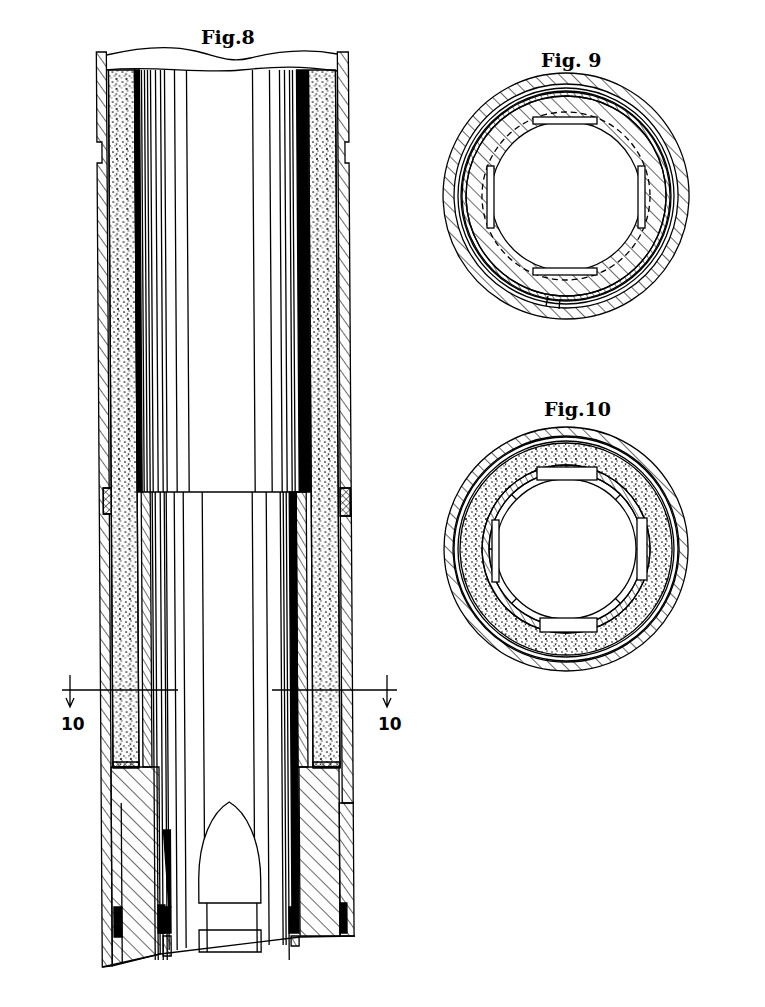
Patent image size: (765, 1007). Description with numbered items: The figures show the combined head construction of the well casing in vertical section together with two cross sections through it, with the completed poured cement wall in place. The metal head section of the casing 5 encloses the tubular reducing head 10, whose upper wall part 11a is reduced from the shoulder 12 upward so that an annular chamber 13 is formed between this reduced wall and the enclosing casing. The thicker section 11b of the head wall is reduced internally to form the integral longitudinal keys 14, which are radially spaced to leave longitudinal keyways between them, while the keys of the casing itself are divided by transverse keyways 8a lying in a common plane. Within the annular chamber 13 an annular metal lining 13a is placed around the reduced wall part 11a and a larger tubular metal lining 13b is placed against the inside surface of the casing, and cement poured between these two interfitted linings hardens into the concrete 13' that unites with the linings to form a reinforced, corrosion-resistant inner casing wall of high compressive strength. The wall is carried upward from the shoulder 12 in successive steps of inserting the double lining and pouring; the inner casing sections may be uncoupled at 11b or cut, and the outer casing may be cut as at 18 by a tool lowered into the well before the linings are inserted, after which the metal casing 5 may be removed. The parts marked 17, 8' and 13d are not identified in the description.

In FIG. 8, the cut 18 is at (350, 145).
In FIG. 8, the hardened cement or concrete 13' is at (249, 418).
In FIG. 8, the thicker wall section 11b is at (316, 493).
In FIG. 8, the reduced upper wall part 11a is at (305, 631).
In FIG. 10, the reduced upper wall part 11a is at (641, 538).
In FIG. 8, the reducing head 10 is at (322, 842).
In FIG. 9, the reducing head 10 is at (690, 197).
In FIG. 8, the shoulder 12 is at (114, 790).
In FIG. 8, the collar 17 is at (100, 512).
In FIG. 8, the transverse keyways 8a is at (347, 923).
In FIG. 9, the head section of the casing 5 is at (689, 237).
In FIG. 10, the head section of the casing 5 is at (650, 460).
In FIG. 9, the inner ring 8' is at (588, 196).
In FIG. 9, the annular chamber 13 is at (572, 204).
In FIG. 9, the longitudinal keys 14 is at (583, 300).
In FIG. 10, the larger annular metal lining 13b is at (667, 602).
In FIG. 10, the gravel ring 13d is at (663, 583).
In FIG. 10, the annular metal lining 13a is at (643, 621).